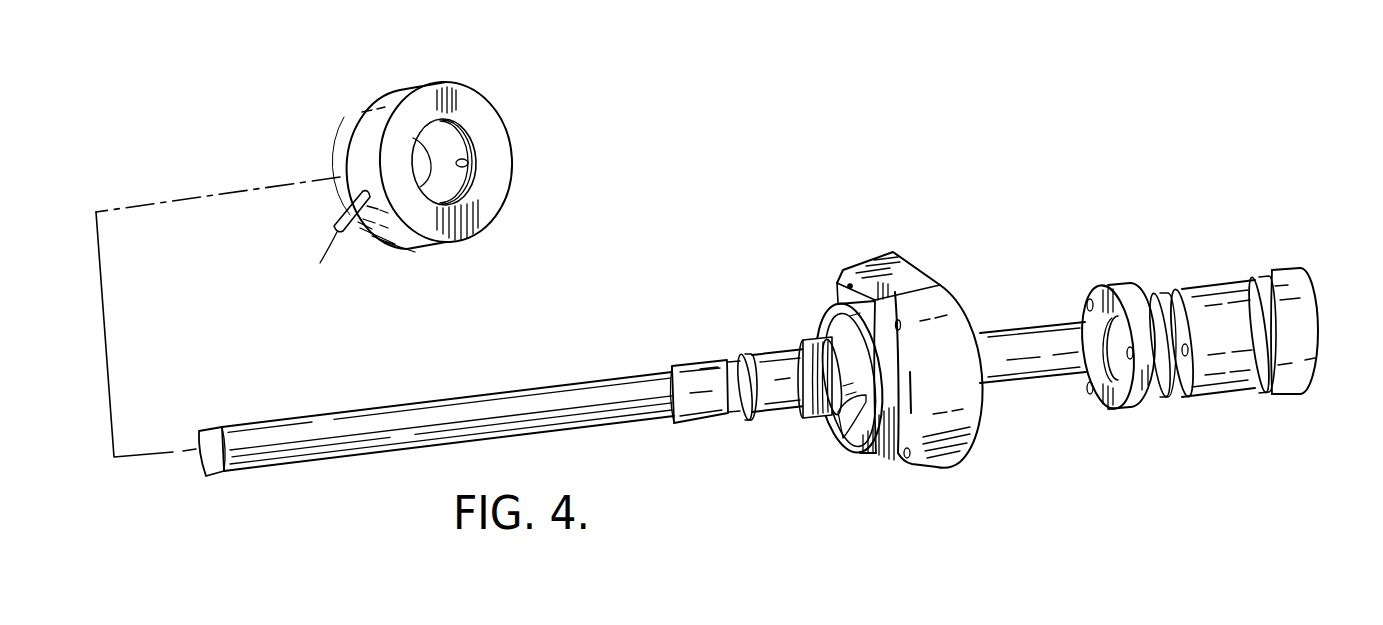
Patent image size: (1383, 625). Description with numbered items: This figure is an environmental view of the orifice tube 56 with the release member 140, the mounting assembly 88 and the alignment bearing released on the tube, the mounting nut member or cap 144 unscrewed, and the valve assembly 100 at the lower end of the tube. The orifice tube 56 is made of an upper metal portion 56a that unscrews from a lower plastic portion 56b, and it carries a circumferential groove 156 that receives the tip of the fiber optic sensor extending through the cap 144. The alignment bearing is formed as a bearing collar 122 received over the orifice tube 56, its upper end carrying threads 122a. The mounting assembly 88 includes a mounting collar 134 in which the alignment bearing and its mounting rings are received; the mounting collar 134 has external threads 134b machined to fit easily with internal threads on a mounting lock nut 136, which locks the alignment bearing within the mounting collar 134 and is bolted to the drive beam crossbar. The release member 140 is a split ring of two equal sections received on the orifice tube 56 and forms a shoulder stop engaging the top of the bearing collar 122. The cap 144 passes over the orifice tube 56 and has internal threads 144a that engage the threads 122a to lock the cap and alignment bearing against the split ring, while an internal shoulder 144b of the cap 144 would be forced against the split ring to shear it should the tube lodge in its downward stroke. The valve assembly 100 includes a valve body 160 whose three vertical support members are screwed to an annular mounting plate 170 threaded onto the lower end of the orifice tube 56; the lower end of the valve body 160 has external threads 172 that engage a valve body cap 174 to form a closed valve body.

The orifice tube 56 is at (502, 391).
The upper metal portion 56a is at (387, 405).
The lower plastic portion 56b is at (697, 426).
The circumferential groove 156 is at (713, 360).
The release member 140 is at (760, 328).
The threads 122a is at (808, 348).
The bearing collar 122 is at (840, 427).
The mounting assembly 88 is at (883, 342).
The mounting collar 134 is at (880, 453).
The external threads 134b is at (848, 285).
The mounting lock nut 136 is at (910, 276).
The mounting nut member 144 is at (398, 191).
The internal threads 144a is at (468, 164).
The internal shoulder 144b is at (431, 142).
The valve assembly 100 is at (1218, 319).
The mounting plate 170 is at (1108, 410).
The valve body 160 is at (1220, 377).
The external threads 172 is at (1248, 377).
The valve body cap 174 is at (1288, 265).